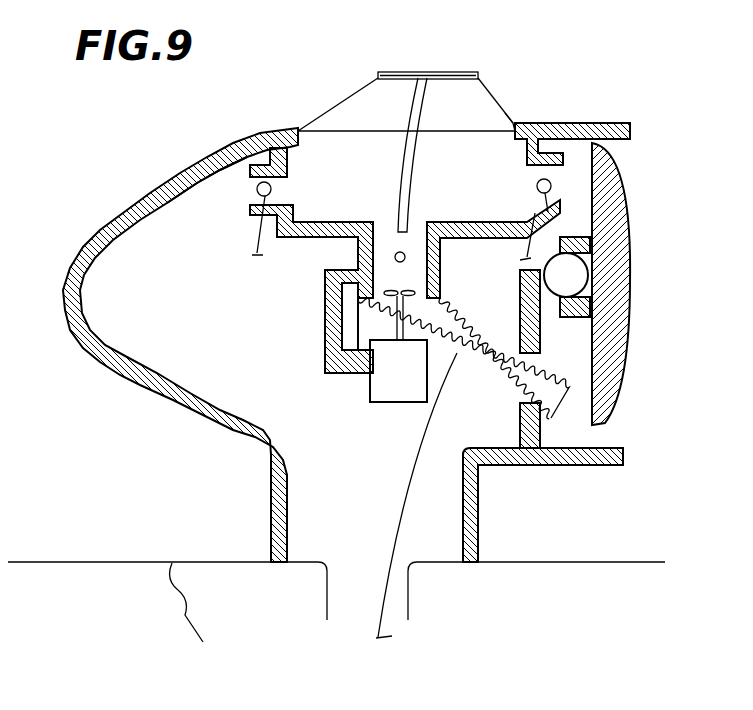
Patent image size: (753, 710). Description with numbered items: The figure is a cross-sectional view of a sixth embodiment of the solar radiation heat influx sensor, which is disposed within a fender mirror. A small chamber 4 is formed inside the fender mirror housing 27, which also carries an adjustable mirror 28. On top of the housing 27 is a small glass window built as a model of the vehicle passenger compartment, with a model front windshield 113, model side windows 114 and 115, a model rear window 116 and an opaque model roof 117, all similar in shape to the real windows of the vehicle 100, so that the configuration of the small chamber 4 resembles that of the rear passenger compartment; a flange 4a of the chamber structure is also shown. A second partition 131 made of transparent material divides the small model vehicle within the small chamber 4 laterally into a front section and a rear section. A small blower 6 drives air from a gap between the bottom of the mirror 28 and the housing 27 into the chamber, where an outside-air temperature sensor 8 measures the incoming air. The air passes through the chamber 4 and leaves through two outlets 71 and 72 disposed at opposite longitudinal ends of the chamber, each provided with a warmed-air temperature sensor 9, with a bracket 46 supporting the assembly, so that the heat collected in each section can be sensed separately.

The small chamber 4 is at (507, 157).
The flange 4a is at (293, 163).
The small blower 6 is at (392, 402).
The outside-air temperature sensor 8 is at (395, 257).
The warmed-air temperature sensor 9 is at (249, 197).
The fender mirror housing 27 is at (170, 405).
The adjustable mirror 28 is at (620, 270).
The bracket 46 is at (488, 203).
The outlet 71 is at (253, 185).
The outlet 72 is at (567, 188).
The vehicle 100 is at (615, 575).
The model front windshield 113 is at (340, 107).
The model side window 114 is at (399, 87).
The model side window 115 is at (480, 102).
The model rear window 116 is at (510, 113).
The model roof 117 is at (450, 77).
The second partition 131 is at (410, 180).